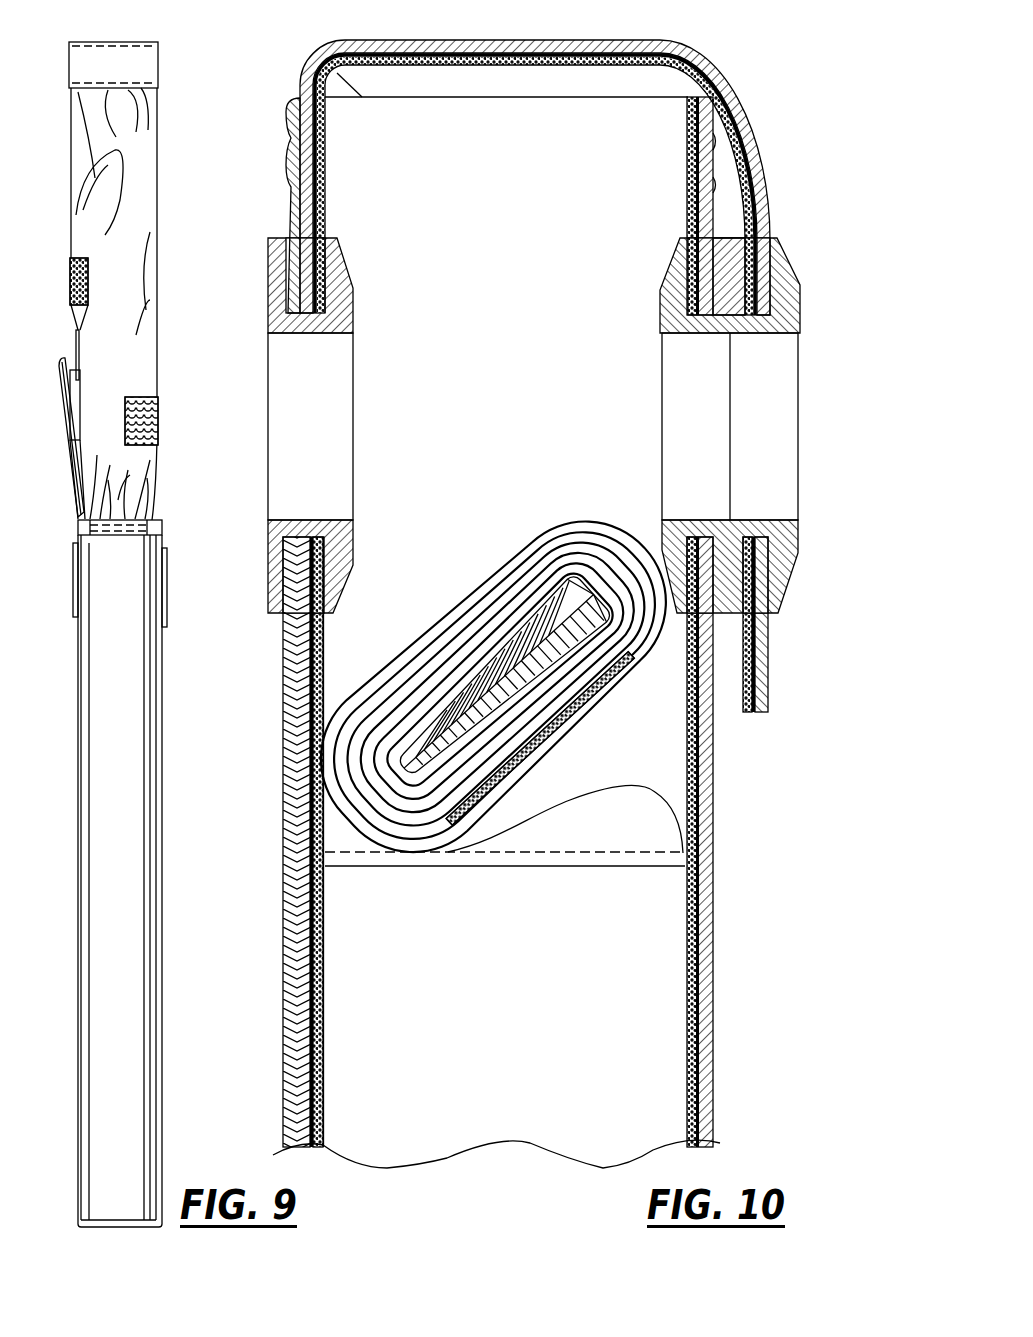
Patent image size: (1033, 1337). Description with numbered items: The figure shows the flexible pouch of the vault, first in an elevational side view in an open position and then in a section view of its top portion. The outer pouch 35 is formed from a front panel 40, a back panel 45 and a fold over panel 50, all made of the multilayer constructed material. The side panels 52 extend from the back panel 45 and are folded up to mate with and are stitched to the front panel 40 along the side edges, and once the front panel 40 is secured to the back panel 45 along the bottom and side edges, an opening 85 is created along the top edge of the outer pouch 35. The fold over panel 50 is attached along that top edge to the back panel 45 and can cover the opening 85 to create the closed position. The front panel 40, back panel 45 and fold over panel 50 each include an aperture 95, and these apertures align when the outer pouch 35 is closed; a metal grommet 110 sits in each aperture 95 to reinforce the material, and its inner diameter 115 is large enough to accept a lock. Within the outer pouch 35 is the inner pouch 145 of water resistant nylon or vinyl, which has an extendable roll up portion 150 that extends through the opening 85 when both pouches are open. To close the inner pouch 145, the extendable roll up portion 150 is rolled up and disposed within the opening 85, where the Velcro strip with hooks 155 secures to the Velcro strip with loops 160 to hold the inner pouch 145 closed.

In FIG. 9, the outer pouch 35 is at (109, 881).
In FIG. 10, the outer pouch 35 is at (497, 632).
In FIG. 10, the front panel 40 is at (713, 1028).
In FIG. 10, the back panel 45 is at (283, 1030).
In FIG. 9, the fold over panel 50 is at (72, 473).
In FIG. 10, the fold over panel 50 is at (357, 47).
In FIG. 9, the side panels 52 is at (128, 748).
In FIG. 9, the opening 85 is at (132, 512).
In FIG. 10, the opening 85 is at (320, 63).
In FIG. 10, the aperture 95 is at (285, 418).
In FIG. 10, the metal grommet 110 is at (275, 530).
In FIG. 10, the inner diameter 115 is at (310, 335).
In FIG. 9, the inner pouch 145 is at (58, 180).
In FIG. 10, the inner pouch 145 is at (501, 683).
In FIG. 9, the extendable roll up portion 150 is at (135, 300).
In FIG. 9, the Velcro strip with hooks 155 is at (157, 418).
In FIG. 10, the Velcro strip with hooks 155 is at (608, 680).
In FIG. 9, the Velcro strip with loops 160 is at (70, 275).
In FIG. 10, the Velcro strip with loops 160 is at (553, 717).